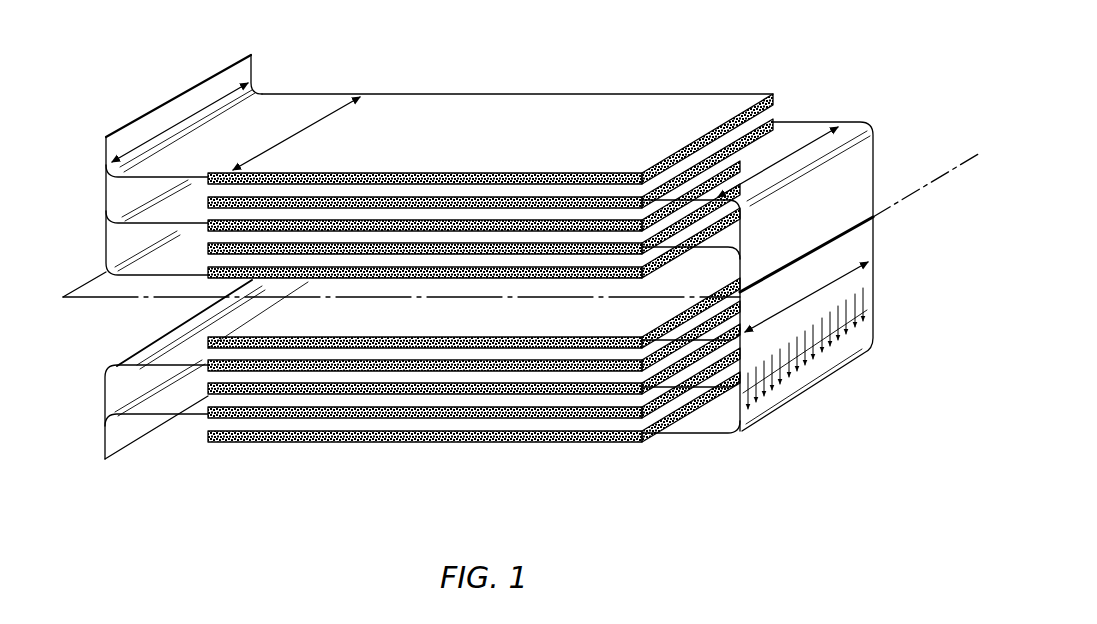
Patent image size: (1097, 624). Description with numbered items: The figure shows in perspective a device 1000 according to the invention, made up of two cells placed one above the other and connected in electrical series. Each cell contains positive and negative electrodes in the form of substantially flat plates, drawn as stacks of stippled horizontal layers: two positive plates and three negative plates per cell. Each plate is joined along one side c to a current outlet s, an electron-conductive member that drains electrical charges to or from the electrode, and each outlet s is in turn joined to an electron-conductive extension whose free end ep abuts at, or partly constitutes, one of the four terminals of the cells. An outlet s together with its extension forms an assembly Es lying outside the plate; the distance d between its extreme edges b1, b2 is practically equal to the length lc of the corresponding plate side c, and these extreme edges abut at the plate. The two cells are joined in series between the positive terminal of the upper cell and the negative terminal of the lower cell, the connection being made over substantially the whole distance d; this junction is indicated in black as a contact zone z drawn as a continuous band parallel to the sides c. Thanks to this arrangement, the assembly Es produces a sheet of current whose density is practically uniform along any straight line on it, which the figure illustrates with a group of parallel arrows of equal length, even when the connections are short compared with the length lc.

The device 1000 is at (716, 56).
The distance d is at (490, 207).
The length of side c lc is at (296, 133).
The side c is at (281, 138).
The assembly Es is at (160, 177).
The extreme edge b1 is at (739, 420).
The extreme edge b2 is at (308, 93).
The current outlet s is at (333, 95).
The free end ep is at (254, 68).
The electrical contact zone z is at (764, 280).